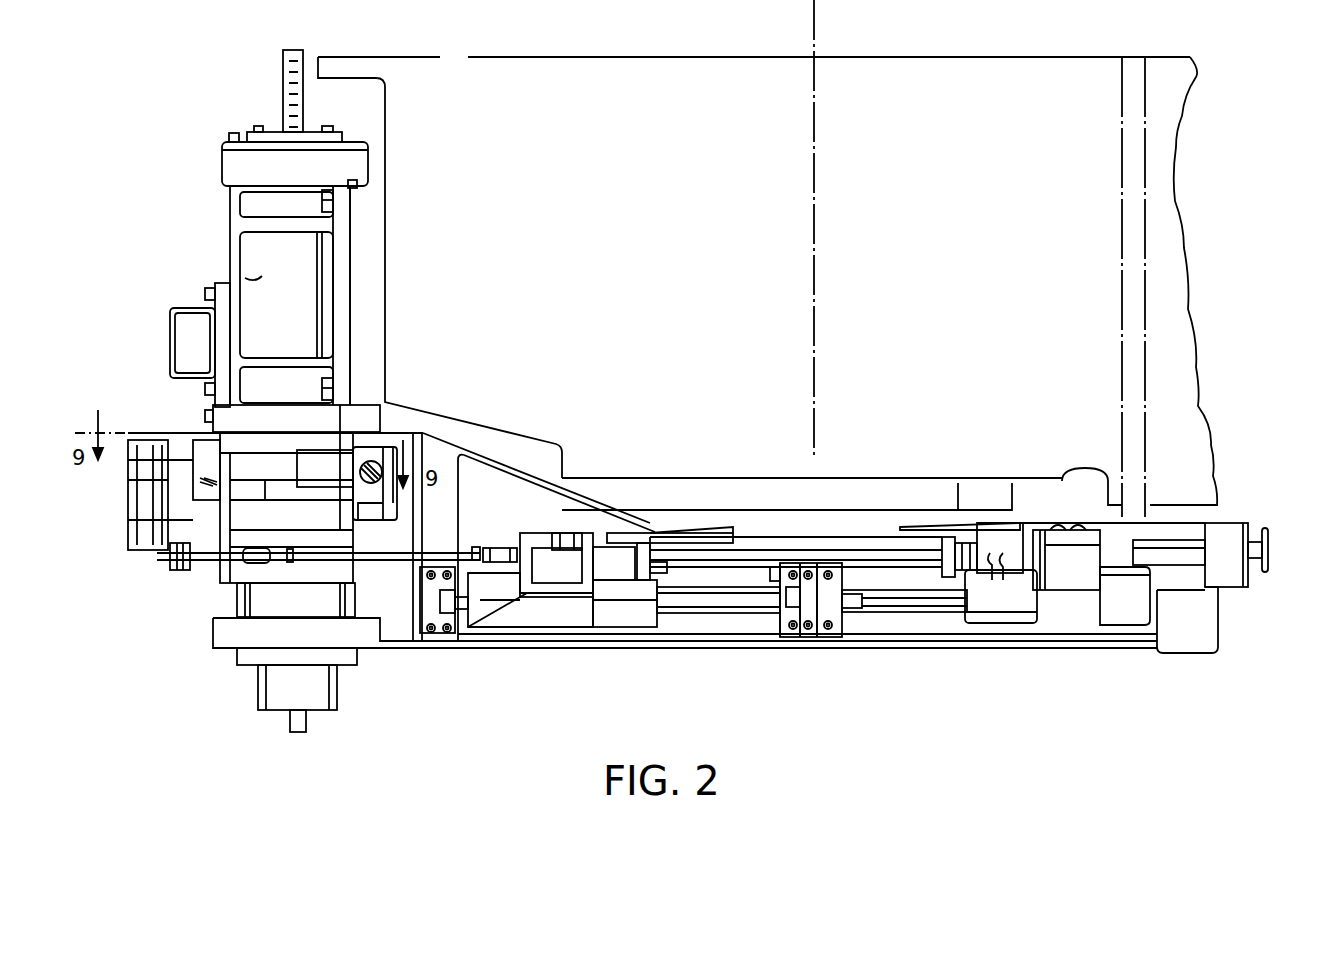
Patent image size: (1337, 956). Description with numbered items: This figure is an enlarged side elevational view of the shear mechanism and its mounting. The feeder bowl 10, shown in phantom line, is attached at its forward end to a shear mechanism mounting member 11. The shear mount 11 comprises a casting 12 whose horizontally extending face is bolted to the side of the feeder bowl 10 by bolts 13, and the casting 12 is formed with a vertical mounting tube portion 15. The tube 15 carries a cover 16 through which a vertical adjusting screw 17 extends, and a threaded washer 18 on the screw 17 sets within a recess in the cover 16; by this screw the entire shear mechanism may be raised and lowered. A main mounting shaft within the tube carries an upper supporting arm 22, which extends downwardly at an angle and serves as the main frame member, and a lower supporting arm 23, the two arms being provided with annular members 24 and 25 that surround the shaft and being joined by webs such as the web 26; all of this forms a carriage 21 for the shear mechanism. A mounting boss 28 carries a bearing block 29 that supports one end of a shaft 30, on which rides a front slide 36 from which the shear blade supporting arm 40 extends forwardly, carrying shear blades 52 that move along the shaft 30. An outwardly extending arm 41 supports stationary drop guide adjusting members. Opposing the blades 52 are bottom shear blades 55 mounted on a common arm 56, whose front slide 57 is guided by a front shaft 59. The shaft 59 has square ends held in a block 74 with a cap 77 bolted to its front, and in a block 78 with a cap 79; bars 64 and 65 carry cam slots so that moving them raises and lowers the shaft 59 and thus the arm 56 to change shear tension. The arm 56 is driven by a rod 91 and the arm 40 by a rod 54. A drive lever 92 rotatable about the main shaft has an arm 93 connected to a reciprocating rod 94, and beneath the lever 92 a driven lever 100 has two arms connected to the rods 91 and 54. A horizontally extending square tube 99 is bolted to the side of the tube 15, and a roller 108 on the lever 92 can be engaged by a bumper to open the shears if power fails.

The feeder bowl 10 is at (430, 40).
The shear mechanism mounting member 11 is at (243, 224).
The casting 12 is at (343, 317).
The bolts 13 is at (335, 203).
The vertical mounting tube portion 15 is at (237, 263).
The cover 16 is at (348, 148).
The vertical adjusting screw 17 is at (305, 78).
The threaded washer 18 is at (272, 136).
The carriage 21 is at (566, 478).
The upper supporting arm 22 is at (518, 468).
The lower supporting arm 23 is at (785, 555).
The annular member 24 is at (254, 420).
The annular member 25 is at (228, 637).
The web 26 is at (450, 528).
The mounting boss 28 is at (845, 635).
The bearing block 29 is at (840, 601).
The shaft 30 is at (873, 596).
The front slide 36 is at (1000, 595).
The shear blade supporting arm 40 is at (1065, 575).
The arm 41 is at (1197, 625).
The shear blades 52 is at (915, 528).
The rod 54 is at (778, 548).
The bottom shear blades 55 is at (714, 527).
The arm 56 is at (568, 580).
The front slide 57 is at (533, 612).
The front shaft 59 is at (692, 595).
The bar 64 is at (445, 612).
The bar 65 is at (786, 600).
The block 74 is at (790, 572).
The cap 77 is at (803, 630).
The block 78 is at (462, 572).
The cap 79 is at (418, 600).
The rod 91 is at (390, 558).
The drive lever 92 is at (255, 472).
The arm 93 is at (357, 445).
The rod 94 is at (372, 462).
The square tube 99 is at (168, 343).
The driven lever 100 is at (257, 602).
The roller 108 is at (137, 495).